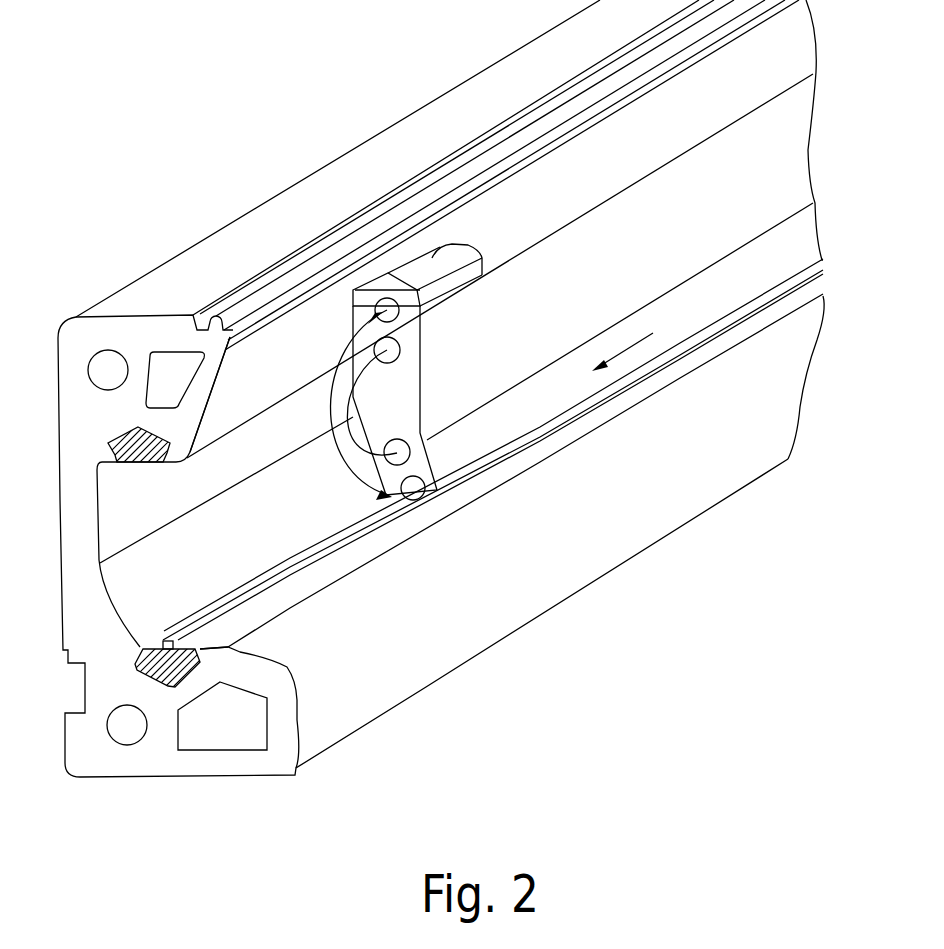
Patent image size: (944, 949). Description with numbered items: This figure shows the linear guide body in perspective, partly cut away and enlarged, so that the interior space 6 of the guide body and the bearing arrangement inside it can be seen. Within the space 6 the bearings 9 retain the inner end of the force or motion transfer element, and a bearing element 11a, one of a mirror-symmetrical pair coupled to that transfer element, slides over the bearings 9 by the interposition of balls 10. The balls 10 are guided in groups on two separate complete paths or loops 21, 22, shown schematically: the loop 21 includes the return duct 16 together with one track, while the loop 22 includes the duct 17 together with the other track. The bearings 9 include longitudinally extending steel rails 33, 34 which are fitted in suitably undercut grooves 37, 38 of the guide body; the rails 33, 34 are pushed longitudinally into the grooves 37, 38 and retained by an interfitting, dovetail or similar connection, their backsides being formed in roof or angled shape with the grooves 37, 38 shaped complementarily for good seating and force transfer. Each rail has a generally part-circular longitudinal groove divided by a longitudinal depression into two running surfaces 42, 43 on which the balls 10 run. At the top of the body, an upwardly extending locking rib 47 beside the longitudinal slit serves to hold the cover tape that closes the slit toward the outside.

The space 6 is at (273, 515).
The bearings 9 is at (346, 311).
The balls 10 is at (421, 499).
The bearing element 11a is at (632, 278).
The return duct 16 is at (423, 438).
The duct 17 is at (387, 350).
The loop 21 is at (331, 403).
The loop 22 is at (346, 464).
The steel rail 33 is at (110, 447).
The steel rail 34 is at (136, 664).
The groove 37 is at (110, 426).
The groove 38 is at (162, 697).
The running surface 42 is at (133, 463).
The running surface 43 is at (143, 460).
The locking rib 47 is at (273, 293).